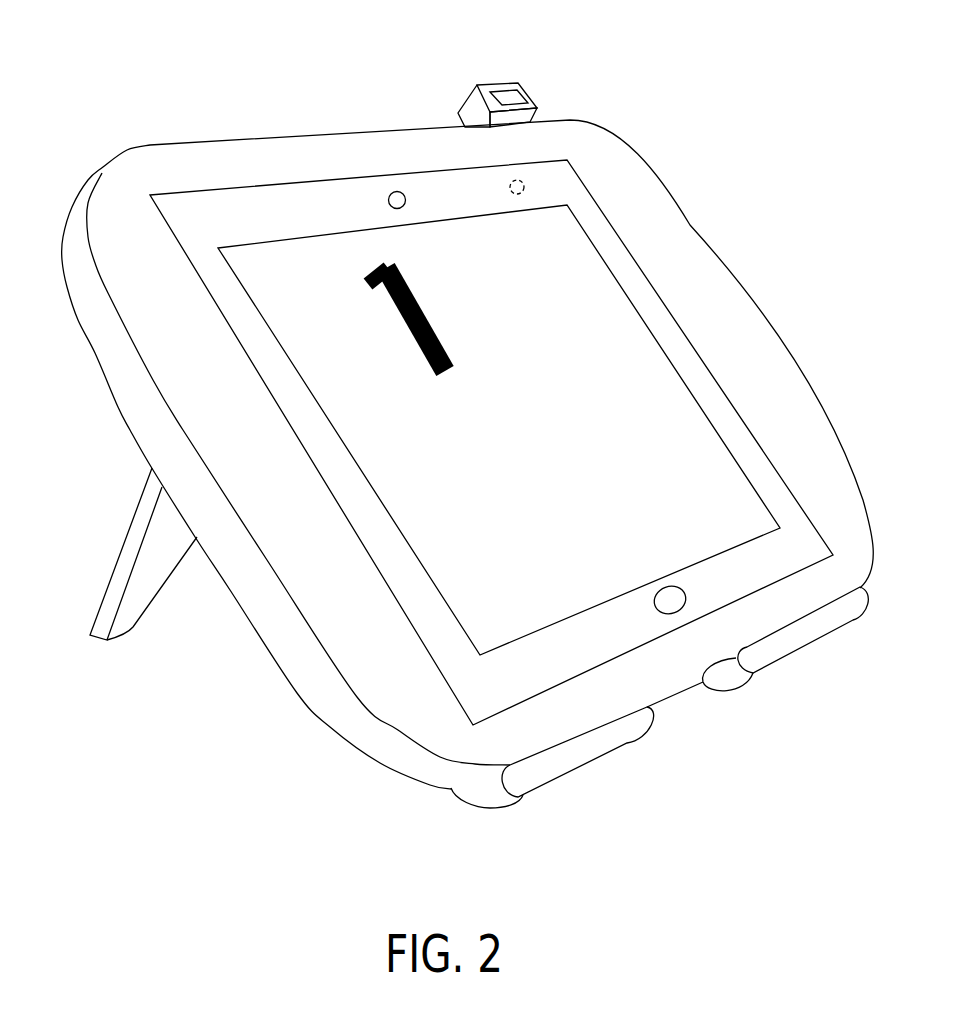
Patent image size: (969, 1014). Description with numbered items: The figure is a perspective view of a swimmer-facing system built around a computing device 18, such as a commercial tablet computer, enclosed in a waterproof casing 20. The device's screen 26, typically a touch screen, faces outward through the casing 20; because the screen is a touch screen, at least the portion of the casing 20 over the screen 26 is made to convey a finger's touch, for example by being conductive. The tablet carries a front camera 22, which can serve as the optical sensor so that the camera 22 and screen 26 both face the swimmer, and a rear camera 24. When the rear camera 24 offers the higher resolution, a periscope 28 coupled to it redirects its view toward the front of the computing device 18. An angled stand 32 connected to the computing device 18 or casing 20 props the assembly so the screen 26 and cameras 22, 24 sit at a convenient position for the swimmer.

The computing device 18 is at (302, 207).
The waterproof casing 20 is at (168, 170).
The front camera 22 is at (396, 192).
The rear camera 24 is at (524, 184).
The screen 26 is at (413, 517).
The periscope 28 is at (473, 92).
The angled stand 32 is at (127, 533).